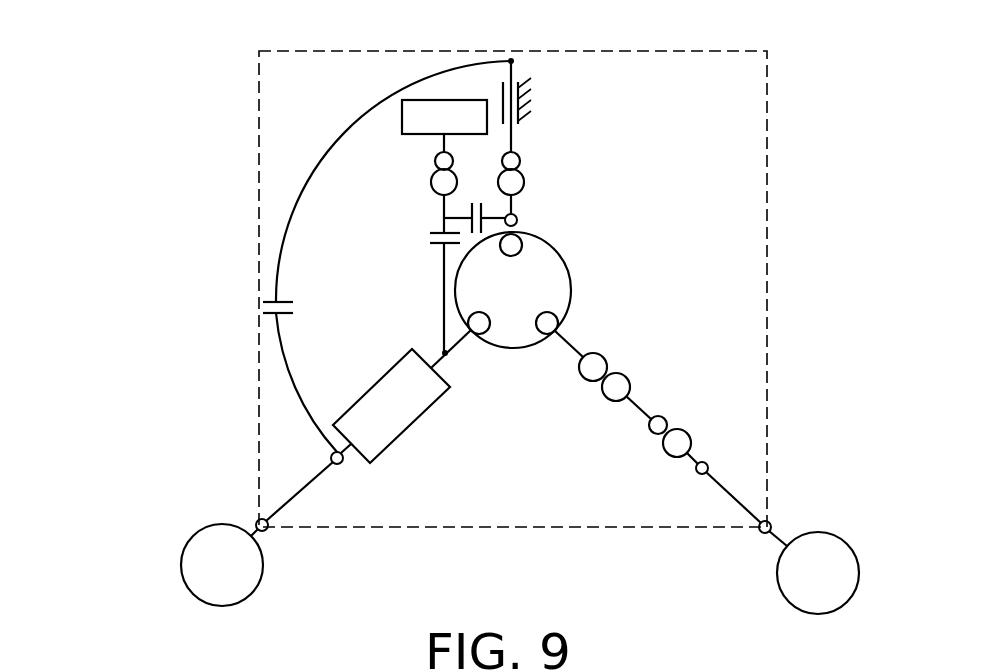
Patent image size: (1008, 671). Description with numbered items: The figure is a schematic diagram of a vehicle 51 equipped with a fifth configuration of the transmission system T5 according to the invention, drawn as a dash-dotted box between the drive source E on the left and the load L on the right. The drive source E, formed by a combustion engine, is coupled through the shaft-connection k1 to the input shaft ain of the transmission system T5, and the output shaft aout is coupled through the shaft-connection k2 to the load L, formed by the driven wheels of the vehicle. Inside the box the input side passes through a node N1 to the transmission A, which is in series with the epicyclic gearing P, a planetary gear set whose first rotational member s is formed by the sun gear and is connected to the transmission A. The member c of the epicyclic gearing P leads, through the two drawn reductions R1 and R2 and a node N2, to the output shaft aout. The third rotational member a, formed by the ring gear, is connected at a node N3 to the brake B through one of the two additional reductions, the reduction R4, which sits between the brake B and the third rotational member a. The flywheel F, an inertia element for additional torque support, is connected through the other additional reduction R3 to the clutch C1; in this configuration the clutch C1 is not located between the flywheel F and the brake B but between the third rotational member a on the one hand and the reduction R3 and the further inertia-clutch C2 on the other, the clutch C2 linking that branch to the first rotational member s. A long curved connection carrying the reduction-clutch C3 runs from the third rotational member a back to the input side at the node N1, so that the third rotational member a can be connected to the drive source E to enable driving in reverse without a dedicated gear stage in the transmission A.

The vehicle 51 is at (143, 137).
The transmission system T5 is at (252, 207).
The brake B is at (527, 97).
The flywheel F is at (444, 117).
The reduction R3 is at (435, 168).
The reduction R4 is at (523, 168).
The inertia-clutch C1 is at (474, 207).
The further inertia-clutch C2 is at (427, 290).
The reduction-clutch C3 is at (387, 256).
The node N3 is at (517, 220).
The epicyclic gearing P is at (513, 290).
The third rotational member a is at (520, 250).
The first rotational member s is at (479, 323).
The cathode c is at (547, 323).
The transmission A is at (391, 406).
The resistor R1 is at (608, 373).
The resistor R2 is at (672, 428).
The input node N1 is at (342, 463).
The output node N2 is at (697, 473).
The shaft-connection k1 is at (257, 520).
The shaft-connection k2 is at (770, 522).
The drive source E is at (222, 565).
The load L is at (814, 572).
The input shaft ain is at (300, 495).
The output shaft aout is at (743, 507).